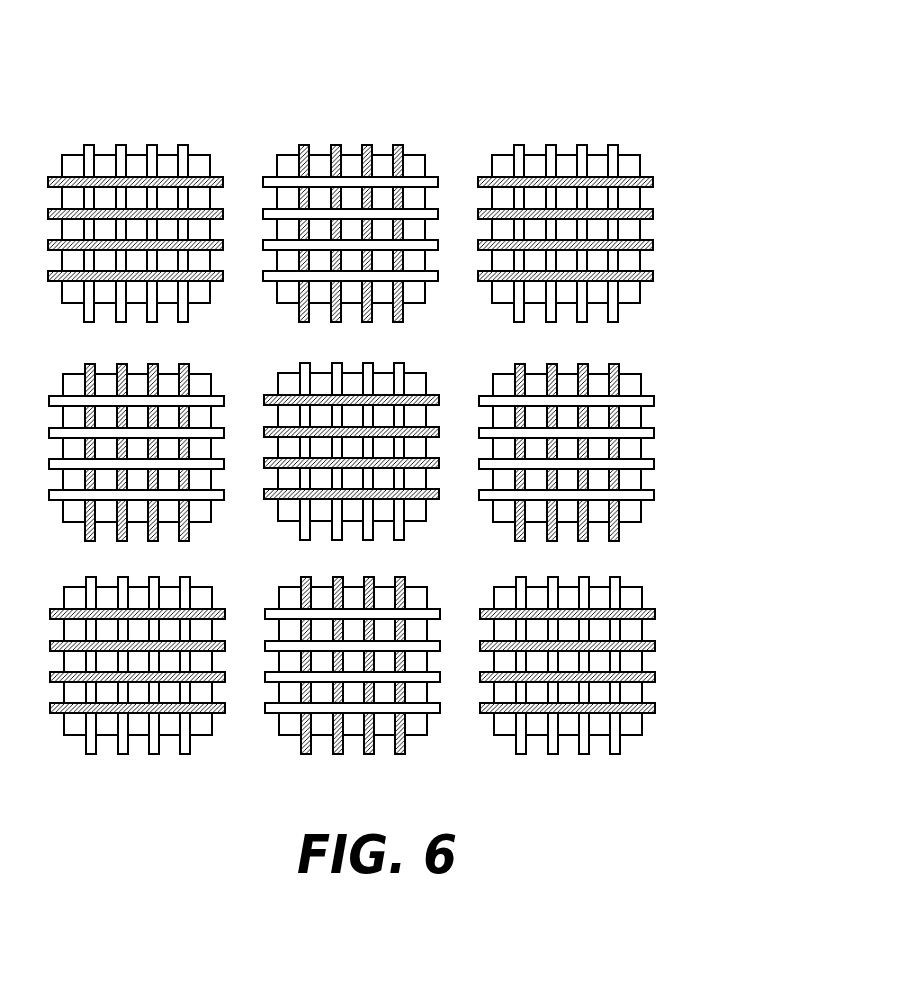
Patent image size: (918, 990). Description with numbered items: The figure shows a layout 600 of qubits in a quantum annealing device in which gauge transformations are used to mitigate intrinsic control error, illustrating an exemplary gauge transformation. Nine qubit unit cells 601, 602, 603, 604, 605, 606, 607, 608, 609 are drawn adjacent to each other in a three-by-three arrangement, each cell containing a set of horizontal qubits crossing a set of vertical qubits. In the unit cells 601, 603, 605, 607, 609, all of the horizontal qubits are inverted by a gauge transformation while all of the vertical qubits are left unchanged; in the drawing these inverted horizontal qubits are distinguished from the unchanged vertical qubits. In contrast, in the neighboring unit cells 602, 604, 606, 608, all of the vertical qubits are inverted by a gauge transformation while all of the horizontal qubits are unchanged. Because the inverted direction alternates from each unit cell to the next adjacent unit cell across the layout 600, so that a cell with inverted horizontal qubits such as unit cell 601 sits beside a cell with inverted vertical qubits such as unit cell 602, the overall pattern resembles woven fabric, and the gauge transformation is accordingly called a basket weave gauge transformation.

The set of weave patterns 600 is at (682, 70).
The qubit unit cell 601 is at (155, 220).
The qubit unit cell 602 is at (370, 220).
The qubit unit cell 603 is at (585, 220).
The qubit unit cell 604 is at (156, 439).
The qubit unit cell 605 is at (371, 438).
The qubit unit cell 606 is at (586, 439).
The qubit unit cell 607 is at (157, 652).
The qubit unit cell 608 is at (372, 652).
The qubit unit cell 609 is at (587, 652).